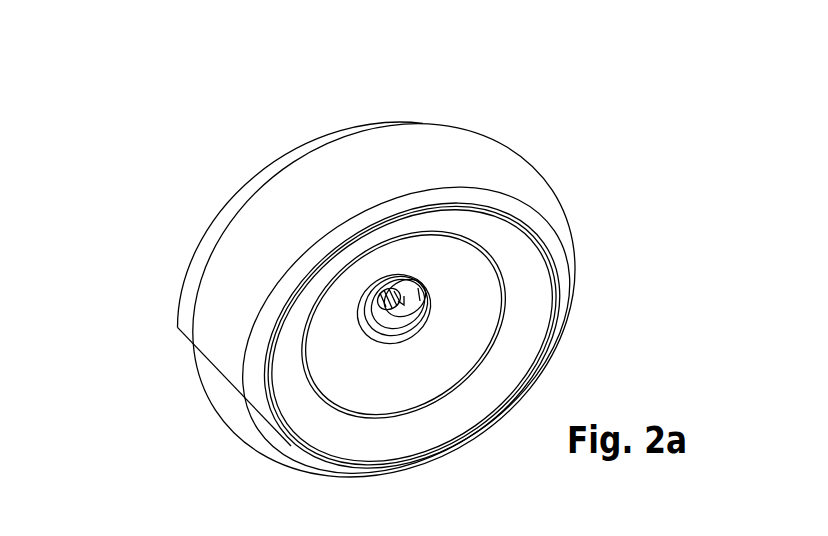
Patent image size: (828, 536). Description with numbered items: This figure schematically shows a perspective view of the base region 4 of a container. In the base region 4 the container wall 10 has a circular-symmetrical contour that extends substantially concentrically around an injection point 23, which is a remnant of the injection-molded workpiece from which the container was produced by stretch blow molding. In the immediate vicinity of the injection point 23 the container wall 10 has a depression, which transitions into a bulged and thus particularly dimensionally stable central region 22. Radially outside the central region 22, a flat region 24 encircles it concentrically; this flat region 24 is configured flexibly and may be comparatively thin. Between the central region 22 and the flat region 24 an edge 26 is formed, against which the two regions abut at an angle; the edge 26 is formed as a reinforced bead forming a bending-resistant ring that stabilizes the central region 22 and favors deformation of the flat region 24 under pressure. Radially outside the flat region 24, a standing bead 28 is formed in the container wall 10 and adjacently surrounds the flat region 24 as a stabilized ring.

The base region 4 is at (565, 118).
The container wall 10 is at (260, 198).
The central region 22 is at (462, 327).
The injection point 23 is at (421, 298).
The flat region 24 is at (448, 423).
The edge 26 is at (300, 331).
The standing bead 28 is at (289, 441).